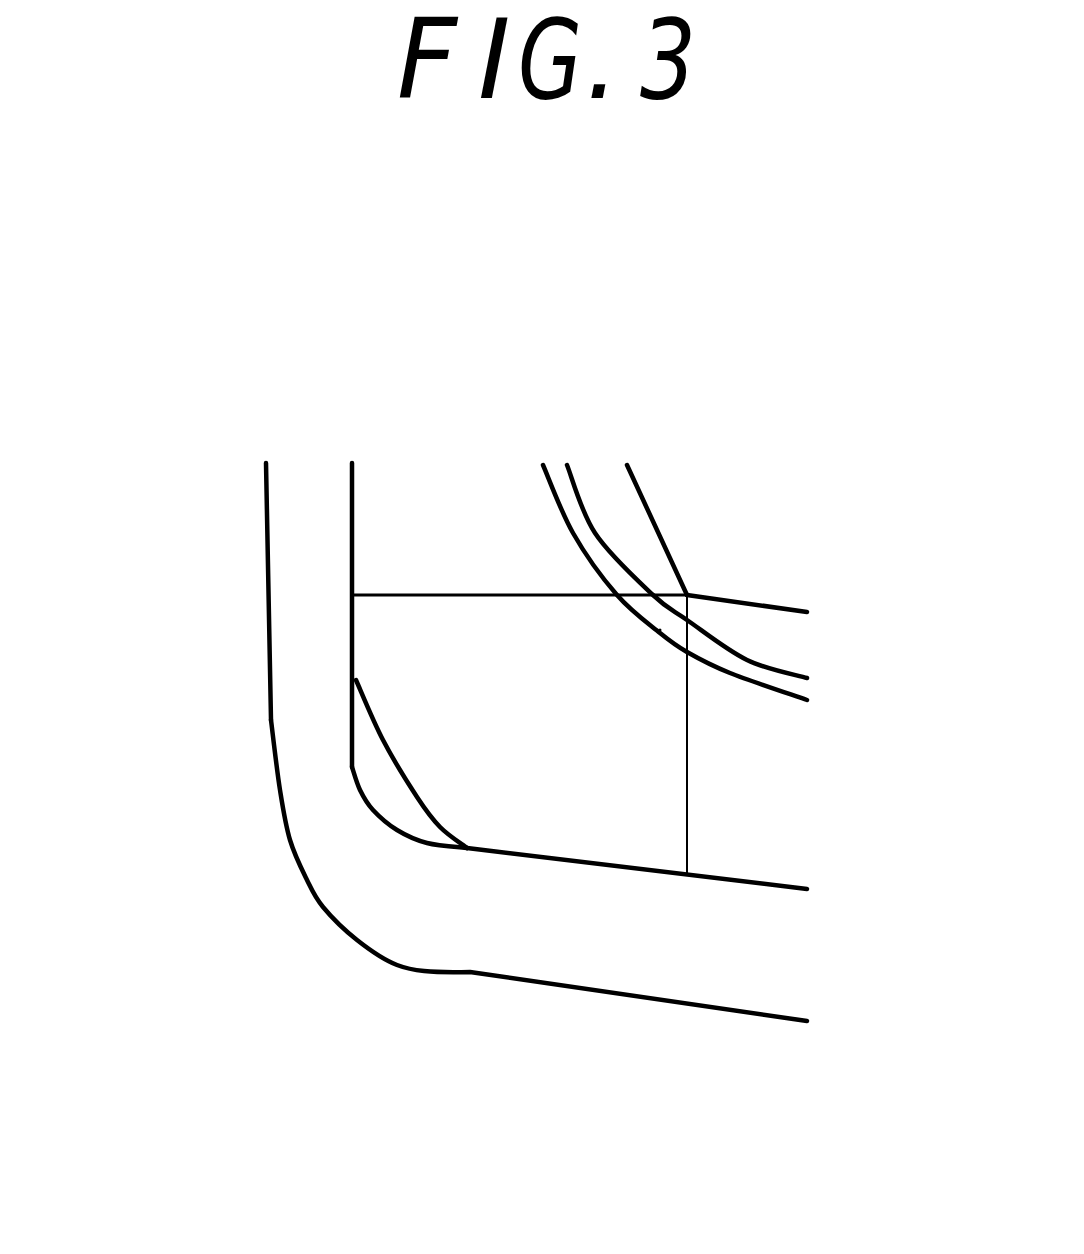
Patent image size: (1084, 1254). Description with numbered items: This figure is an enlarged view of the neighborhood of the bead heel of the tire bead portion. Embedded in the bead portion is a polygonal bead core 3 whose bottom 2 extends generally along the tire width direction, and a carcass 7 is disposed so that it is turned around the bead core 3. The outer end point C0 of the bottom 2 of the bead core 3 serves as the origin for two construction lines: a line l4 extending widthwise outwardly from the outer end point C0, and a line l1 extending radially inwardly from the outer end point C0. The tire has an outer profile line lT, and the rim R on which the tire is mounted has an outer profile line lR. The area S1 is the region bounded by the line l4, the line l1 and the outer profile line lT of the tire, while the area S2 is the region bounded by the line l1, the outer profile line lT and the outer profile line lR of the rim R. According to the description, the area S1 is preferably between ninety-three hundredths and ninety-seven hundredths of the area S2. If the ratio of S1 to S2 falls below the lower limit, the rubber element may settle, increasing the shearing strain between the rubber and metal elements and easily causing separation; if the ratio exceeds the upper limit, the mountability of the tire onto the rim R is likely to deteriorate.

The rim R is at (266, 593).
The bottom 2 is at (753, 605).
The bead core 3 is at (730, 538).
The carcass 7 is at (777, 683).
The line l4 is at (487, 593).
The line l1 is at (689, 770).
The outer profile line of the rim lR is at (363, 782).
The outer profile line of the tire lT is at (413, 795).
The outer end point C0 is at (660, 630).
The area S1 is at (545, 762).
The area S2 is at (433, 830).